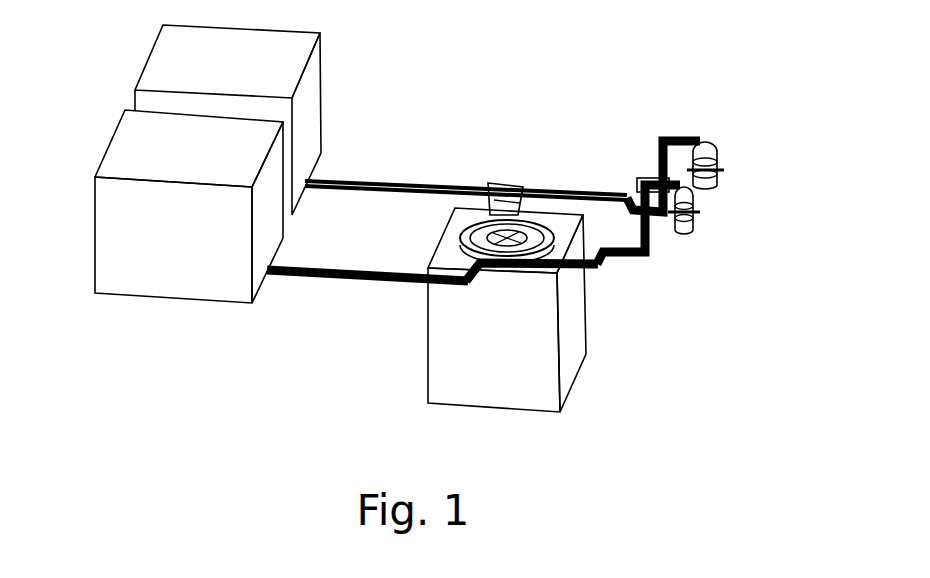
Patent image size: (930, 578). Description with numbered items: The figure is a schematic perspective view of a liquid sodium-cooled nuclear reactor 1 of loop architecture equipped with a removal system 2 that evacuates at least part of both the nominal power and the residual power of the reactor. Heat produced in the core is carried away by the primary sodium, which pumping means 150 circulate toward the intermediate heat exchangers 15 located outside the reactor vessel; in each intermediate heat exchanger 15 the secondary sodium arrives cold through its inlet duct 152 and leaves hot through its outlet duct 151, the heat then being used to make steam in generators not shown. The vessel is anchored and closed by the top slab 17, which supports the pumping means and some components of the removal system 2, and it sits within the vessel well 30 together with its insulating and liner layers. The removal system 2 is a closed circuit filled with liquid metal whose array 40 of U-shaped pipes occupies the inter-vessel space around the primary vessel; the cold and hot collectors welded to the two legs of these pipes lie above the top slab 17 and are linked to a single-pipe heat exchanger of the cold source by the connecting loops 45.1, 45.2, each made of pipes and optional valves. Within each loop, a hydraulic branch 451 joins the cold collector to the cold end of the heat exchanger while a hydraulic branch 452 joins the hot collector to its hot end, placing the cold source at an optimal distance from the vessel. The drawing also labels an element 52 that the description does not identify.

The liquid sodium-cooled nuclear reactor 1 is at (561, 75).
The removal system 2 is at (504, 238).
The intermediate heat exchanger 15 is at (720, 157).
The top slab 17 is at (560, 270).
The vessel well 30 is at (493, 380).
The array of U-shaped pipes 40 is at (457, 238).
The connecting loop 45.1 is at (277, 368).
The connecting loop 45.2 is at (454, 218).
The hydraulic branch 451 is at (353, 178).
The hydraulic branch 452 is at (353, 100).
The battery modules 52 is at (163, 50).
The pumping means 150 is at (658, 178).
The outlet duct 151 is at (555, 187).
The inlet duct 152 is at (660, 133).